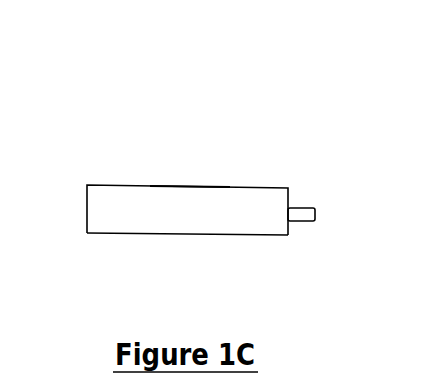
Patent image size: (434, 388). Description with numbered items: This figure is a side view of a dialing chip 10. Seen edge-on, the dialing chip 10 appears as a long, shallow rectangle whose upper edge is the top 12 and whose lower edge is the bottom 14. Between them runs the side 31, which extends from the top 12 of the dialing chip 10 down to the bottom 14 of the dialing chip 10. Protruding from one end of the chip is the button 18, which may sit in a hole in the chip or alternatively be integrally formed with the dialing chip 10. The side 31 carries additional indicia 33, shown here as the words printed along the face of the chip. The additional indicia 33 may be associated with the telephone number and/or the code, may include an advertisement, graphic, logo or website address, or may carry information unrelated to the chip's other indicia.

The dialing chip 10 is at (294, 106).
The top 12 is at (253, 187).
The bottom 14 is at (122, 234).
The button 18 is at (190, 186).
The side 31 is at (100, 199).
The additional indicia 33 is at (108, 225).